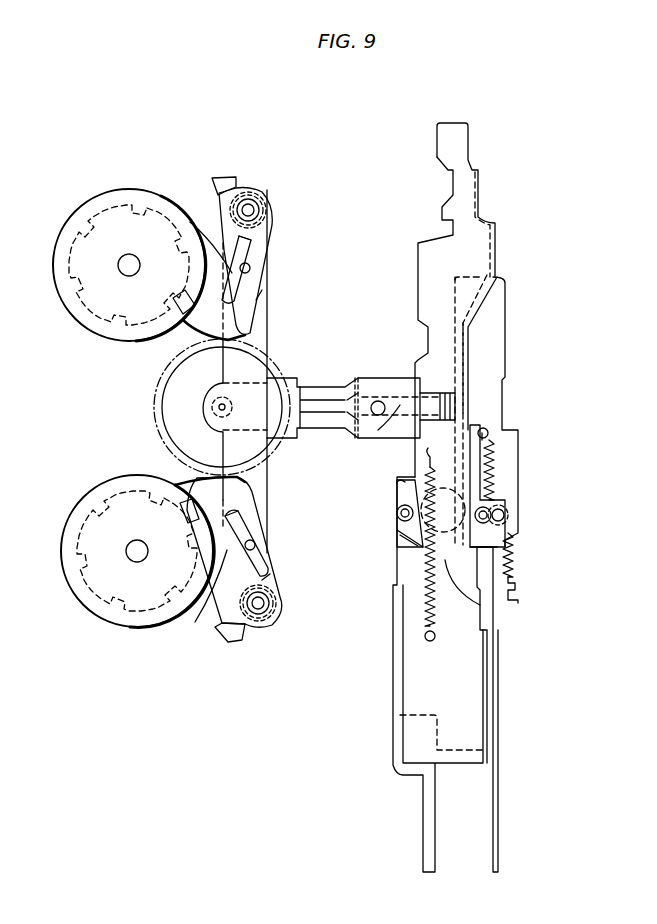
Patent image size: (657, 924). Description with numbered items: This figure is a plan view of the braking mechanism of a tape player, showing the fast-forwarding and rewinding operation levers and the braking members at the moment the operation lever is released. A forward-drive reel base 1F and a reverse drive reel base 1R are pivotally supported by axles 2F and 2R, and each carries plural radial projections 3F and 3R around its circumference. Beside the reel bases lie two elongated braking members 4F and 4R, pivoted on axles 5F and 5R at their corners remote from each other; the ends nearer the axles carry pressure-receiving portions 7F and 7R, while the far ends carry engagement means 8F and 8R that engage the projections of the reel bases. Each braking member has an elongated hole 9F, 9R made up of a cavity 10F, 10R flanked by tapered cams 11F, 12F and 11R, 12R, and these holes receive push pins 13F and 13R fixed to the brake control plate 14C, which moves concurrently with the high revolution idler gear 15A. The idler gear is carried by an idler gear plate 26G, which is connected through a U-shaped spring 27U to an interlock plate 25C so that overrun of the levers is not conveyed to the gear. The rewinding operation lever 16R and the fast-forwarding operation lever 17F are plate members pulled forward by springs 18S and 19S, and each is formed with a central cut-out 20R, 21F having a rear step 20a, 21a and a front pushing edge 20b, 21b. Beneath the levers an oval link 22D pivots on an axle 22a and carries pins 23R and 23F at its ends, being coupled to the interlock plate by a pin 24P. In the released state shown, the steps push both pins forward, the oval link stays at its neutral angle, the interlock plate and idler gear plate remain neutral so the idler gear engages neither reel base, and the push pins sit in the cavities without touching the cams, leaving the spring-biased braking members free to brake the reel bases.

The forward-drive reel base 1F is at (128, 190).
The axle 2F is at (141, 263).
The projections 3F is at (164, 200).
The braking member 4F is at (273, 238).
The axle 5F is at (260, 210).
The pressure-receiving portion 7F is at (230, 175).
The engagement means 8F is at (178, 302).
The elongated hole 9F is at (210, 232).
The cavity 10F is at (232, 295).
The tapered cam 11F is at (248, 242).
The tapered cam 12F is at (250, 312).
The push pin 13F is at (250, 270).
The brake control plate 14C is at (267, 345).
The high revolution idler gear 15A is at (162, 411).
The idler gear plate 26G is at (384, 382).
The U-shaped spring 27U is at (394, 430).
The reverse drive reel base 1R is at (102, 486).
The axle 2R is at (138, 558).
The projections 3R is at (63, 546).
The braking member 4R is at (277, 590).
The axle 5R is at (263, 614).
The pressure-receiving portion 7R is at (232, 643).
The engagement means 8R is at (182, 488).
The elongated hole 9R is at (198, 600).
The cavity 10R is at (258, 547).
The tapered cam 11R is at (241, 513).
The tapered cam 12R is at (270, 576).
The push pin 13R is at (255, 547).
The rewinding operation lever 16R is at (425, 832).
The fast-forwarding operation lever 17F is at (499, 833).
The spring 18S is at (428, 628).
The spring 19S is at (519, 584).
The cut-out 20R is at (520, 540).
The step 20a is at (500, 498).
The pushing edge 20b is at (514, 560).
The cut-out 21F is at (398, 522).
The step 21a is at (395, 496).
The pushing edge 21b is at (404, 548).
The axle 22a is at (410, 566).
The oval link 22D is at (482, 607).
The pin 23F is at (396, 514).
The pin 23R is at (500, 525).
The pin 24P is at (509, 513).
The interlock plate 25C is at (510, 500).